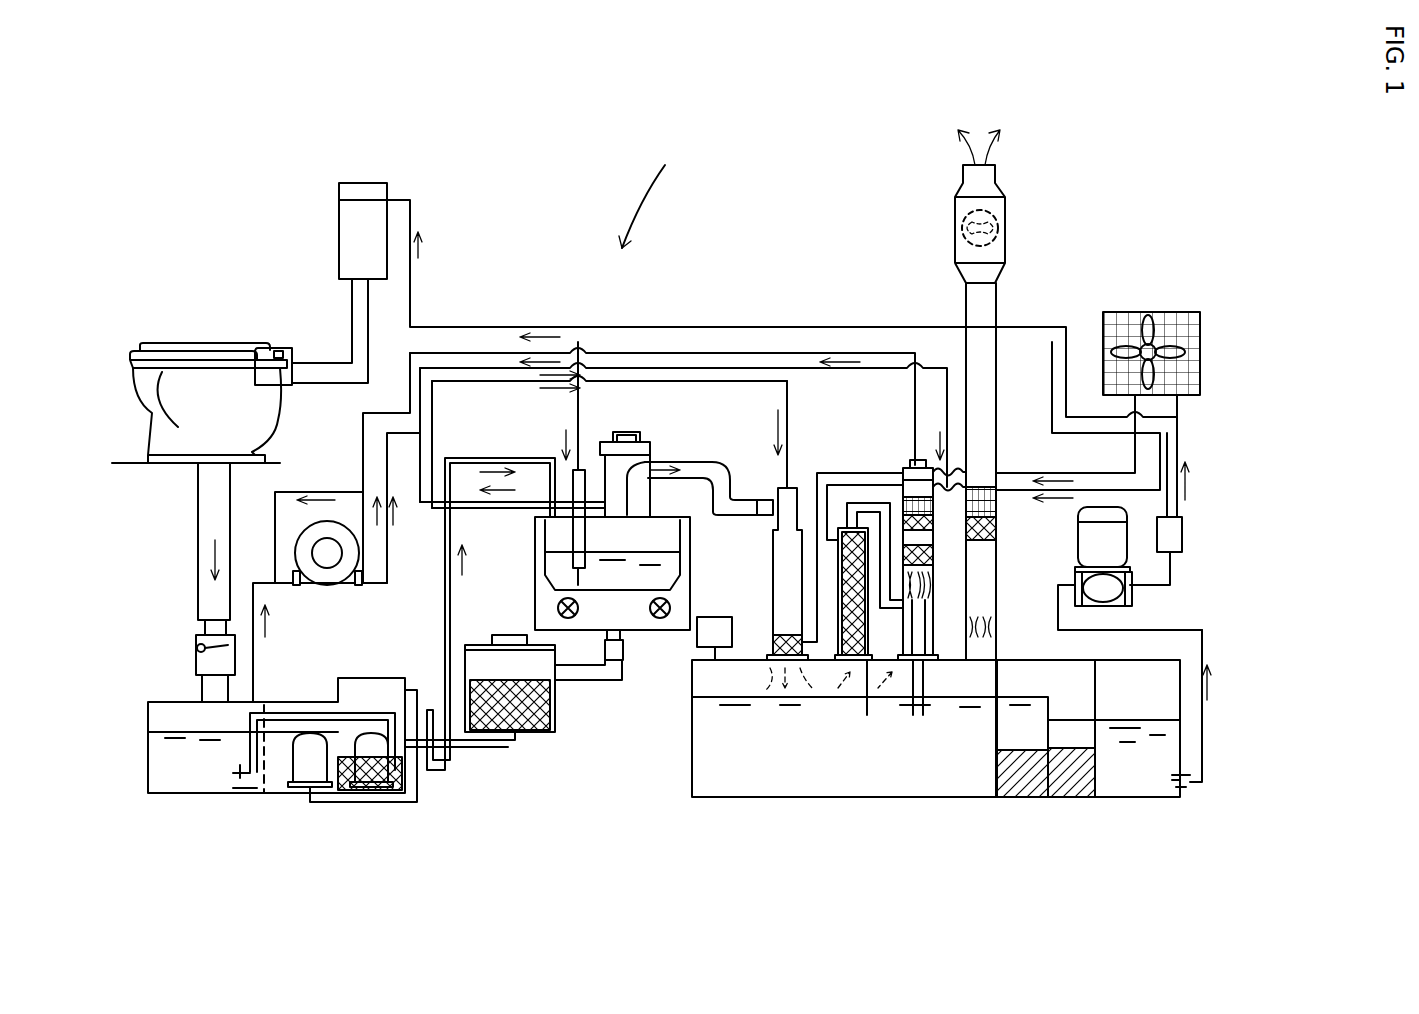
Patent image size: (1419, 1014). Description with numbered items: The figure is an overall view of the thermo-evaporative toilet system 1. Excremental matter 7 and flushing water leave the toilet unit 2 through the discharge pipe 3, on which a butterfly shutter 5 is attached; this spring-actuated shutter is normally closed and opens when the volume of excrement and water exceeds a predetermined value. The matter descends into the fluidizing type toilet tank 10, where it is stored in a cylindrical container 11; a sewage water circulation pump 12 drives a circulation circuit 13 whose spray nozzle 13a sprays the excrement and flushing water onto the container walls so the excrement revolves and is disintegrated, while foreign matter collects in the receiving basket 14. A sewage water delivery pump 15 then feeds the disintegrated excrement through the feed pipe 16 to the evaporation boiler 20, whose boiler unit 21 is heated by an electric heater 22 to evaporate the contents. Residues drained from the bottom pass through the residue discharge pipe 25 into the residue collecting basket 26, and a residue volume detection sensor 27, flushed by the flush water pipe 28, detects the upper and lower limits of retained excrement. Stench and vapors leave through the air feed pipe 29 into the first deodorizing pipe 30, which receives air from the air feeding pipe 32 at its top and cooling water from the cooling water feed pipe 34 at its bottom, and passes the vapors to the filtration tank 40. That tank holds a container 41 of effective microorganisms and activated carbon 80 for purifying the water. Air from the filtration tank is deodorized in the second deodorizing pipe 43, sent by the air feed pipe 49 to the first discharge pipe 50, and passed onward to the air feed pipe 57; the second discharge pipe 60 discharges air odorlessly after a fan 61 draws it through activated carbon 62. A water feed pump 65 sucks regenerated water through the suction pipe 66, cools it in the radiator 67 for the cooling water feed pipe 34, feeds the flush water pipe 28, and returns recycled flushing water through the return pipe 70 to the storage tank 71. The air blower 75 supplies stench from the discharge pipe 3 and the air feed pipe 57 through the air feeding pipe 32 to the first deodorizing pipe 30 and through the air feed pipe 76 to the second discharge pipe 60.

The thermo-evaporative toilet system 1 is at (700, 163).
The toilet unit 2 is at (258, 405).
The discharge pipe 3 is at (198, 513).
The butterfly shutter 5 is at (200, 640).
The excremental matter 7 is at (178, 732).
The fluidizing type toilet tank 10 is at (136, 752).
The cylindrical container 11 is at (148, 780).
The sewage water circulation pump 12 is at (375, 772).
The circulation circuit 13 is at (292, 712).
The spray nozzle 13a is at (238, 778).
The receiving basket for foreign matter 14 is at (398, 786).
The sewage water delivery pump 15 is at (302, 773).
The feed pipe 16 is at (467, 458).
The evaporation boiler 20 is at (523, 587).
The boiler unit 21 is at (535, 612).
The electric heater 22 is at (660, 620).
The residue discharge pipe 25 is at (598, 680).
The residue collecting basket 26 is at (535, 732).
The residue volume detection sensor 27 is at (560, 572).
The flush water pipe 28 is at (572, 470).
The air feed pipe 29 is at (687, 460).
The first deodorizing pipe 30 is at (773, 552).
The air feeding pipe 32 is at (785, 470).
The cooling water feed pipe 34 is at (1130, 410).
The filtration tank 40 is at (770, 797).
The container 41 is at (719, 617).
The second deodorizing pipe 43 is at (858, 545).
The air feed pipe 49 is at (888, 600).
The first discharge pipe 50 is at (910, 468).
The air feed pipe 57 is at (878, 368).
The second discharge pipe 60 is at (988, 392).
The fan 61 is at (957, 218).
The activated carbon 62 is at (985, 487).
The water feed pump 65 is at (1078, 540).
The suction pipe 66 is at (1202, 640).
The radiator 67 is at (1200, 365).
The return pipe 70 is at (712, 327).
The storage tank 71 is at (370, 183).
The air blower 75 is at (345, 586).
The air feed pipe 76 is at (767, 353).
The activated carbon 80 is at (1067, 800).